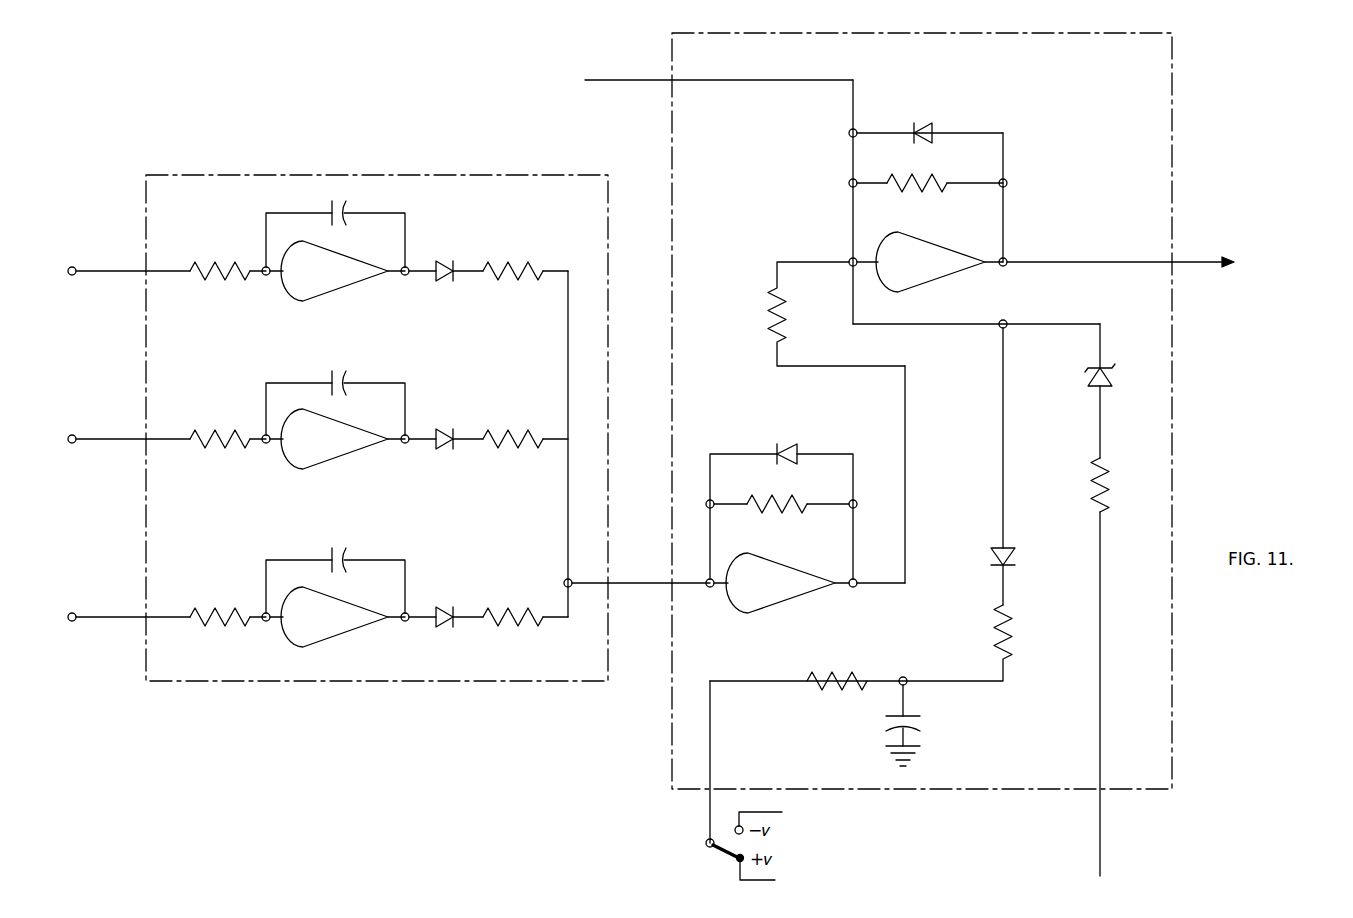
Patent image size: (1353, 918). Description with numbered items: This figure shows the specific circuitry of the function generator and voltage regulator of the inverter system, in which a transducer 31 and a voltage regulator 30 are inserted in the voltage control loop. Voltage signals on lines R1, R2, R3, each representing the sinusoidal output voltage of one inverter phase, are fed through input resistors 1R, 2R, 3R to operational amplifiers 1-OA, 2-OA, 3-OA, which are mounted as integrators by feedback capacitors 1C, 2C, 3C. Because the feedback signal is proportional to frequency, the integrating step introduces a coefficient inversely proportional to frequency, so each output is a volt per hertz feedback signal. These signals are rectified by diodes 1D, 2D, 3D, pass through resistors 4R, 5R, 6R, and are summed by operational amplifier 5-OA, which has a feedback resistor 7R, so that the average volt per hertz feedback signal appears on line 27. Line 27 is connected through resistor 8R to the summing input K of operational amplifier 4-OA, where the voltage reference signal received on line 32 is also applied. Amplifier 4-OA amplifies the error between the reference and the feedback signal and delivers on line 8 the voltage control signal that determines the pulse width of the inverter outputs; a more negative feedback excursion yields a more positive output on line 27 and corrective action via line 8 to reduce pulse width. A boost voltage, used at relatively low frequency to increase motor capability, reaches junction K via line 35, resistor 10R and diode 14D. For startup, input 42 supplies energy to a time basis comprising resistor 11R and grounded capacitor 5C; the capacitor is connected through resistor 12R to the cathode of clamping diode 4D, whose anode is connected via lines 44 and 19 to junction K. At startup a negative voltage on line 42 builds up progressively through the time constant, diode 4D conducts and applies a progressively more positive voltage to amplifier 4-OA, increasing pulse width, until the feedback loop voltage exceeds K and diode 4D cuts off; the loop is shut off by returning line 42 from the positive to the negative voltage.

The transducer 31 is at (324, 175).
The voltage regulator 30 is at (978, 789).
The line R1 is at (122, 269).
The line R2 is at (110, 437).
The line R3 is at (110, 615).
The input resistor 1R is at (220, 262).
The input resistor 2R is at (212, 431).
The input resistor 3R is at (212, 609).
The feedback capacitor 1C is at (332, 205).
The feedback capacitor 2C is at (332, 373).
The feedback capacitor 3C is at (330, 547).
The diode 1D is at (440, 256).
The diode 2D is at (442, 425).
The diode 3D is at (442, 603).
The resistor 4R is at (508, 264).
The resistor 5R is at (508, 433).
The resistor 6R is at (508, 611).
The operational amplifier 1-OA is at (337, 271).
The operational amplifier 2-OA is at (337, 439).
The operational amplifier 3-OA is at (337, 617).
The operational amplifier 4-OA is at (932, 207).
The operational amplifier 5-OA is at (805, 528).
The line 32 is at (762, 80).
The summing input K is at (852, 260).
The line 8 is at (1122, 260).
The line 19 is at (936, 326).
The resistor 8R is at (770, 320).
The line 27 is at (907, 460).
The feedback resistor 7R is at (800, 512).
The line 44 is at (1003, 517).
The clamping diode 4D is at (1013, 554).
The resistor 12R is at (1010, 655).
The resistor 11R is at (848, 672).
The capacitor 5C is at (922, 722).
The input 42 is at (712, 747).
The diode 14D is at (1110, 376).
The resistor 10R is at (1090, 482).
The line 35 is at (1102, 840).